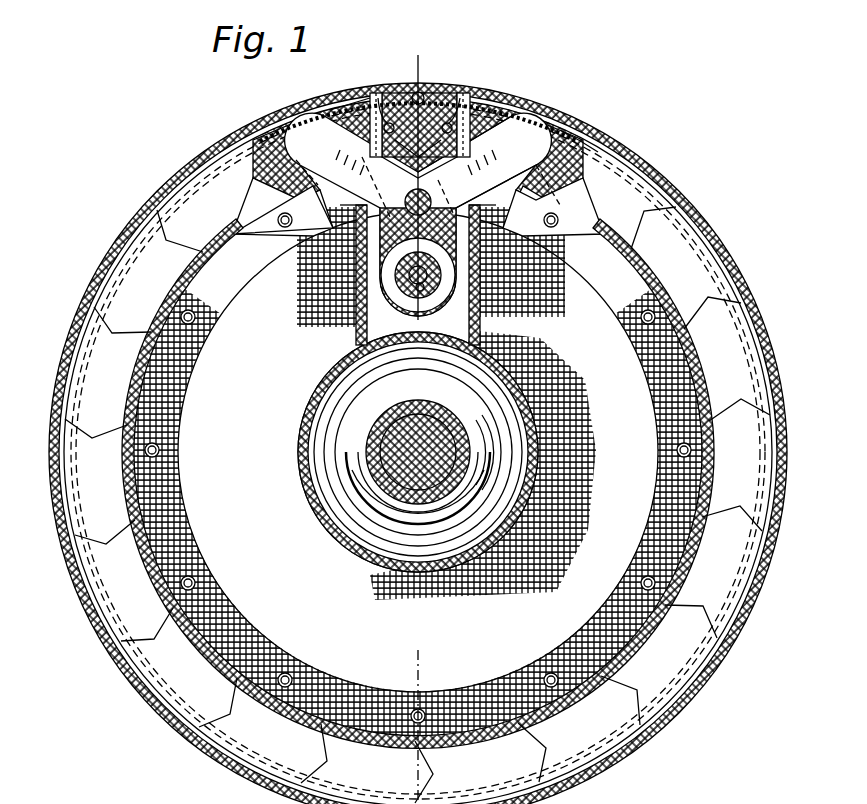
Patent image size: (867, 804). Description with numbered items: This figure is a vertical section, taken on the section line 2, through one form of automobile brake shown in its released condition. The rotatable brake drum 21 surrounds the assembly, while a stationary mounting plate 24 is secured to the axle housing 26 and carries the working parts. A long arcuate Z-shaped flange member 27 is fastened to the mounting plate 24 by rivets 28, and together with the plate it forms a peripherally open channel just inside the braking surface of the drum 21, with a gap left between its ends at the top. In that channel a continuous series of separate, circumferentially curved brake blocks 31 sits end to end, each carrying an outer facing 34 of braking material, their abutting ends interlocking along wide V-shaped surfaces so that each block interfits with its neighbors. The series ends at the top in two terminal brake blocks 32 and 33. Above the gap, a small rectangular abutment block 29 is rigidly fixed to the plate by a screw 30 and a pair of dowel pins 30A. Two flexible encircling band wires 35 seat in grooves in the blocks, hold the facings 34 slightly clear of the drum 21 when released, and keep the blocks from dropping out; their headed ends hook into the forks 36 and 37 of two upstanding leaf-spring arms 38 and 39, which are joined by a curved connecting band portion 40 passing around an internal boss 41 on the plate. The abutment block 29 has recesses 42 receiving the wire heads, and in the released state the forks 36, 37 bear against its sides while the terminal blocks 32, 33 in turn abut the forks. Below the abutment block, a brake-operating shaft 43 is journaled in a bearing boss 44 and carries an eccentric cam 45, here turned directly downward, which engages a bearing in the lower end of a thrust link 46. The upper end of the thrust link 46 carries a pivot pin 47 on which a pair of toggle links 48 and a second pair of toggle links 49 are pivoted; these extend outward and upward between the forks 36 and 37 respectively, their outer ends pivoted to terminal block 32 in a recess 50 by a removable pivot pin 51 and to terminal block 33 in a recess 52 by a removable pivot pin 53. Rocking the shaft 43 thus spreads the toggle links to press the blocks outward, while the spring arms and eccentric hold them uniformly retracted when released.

The section line 2 is at (410, 58).
The brake drum 21 is at (125, 233).
The mounting plate 24 is at (290, 540).
The axle housing 26 is at (378, 438).
The flange member 27 is at (222, 610).
The rivets 28 is at (677, 451).
The abutment block 29 is at (398, 92).
The screw 30 is at (428, 92).
The dowel pins 30A is at (372, 98).
The brake blocks 31 is at (727, 372).
The terminal brake block 32 is at (280, 178).
The terminal brake block 33 is at (547, 175).
The facing 34 is at (280, 123).
The band wires 35 is at (220, 143).
The forks 36 is at (330, 135).
The forks 37 is at (495, 106).
The leaf-spring arm 38 is at (367, 253).
The leaf-spring arm 39 is at (493, 260).
The connecting band portion 40 is at (300, 472).
The internal boss 41 is at (312, 500).
The recesses 42 is at (395, 165).
The brake-operating shaft 43 is at (403, 270).
The bearing boss 44 is at (430, 214).
The eccentric cam 45 is at (407, 292).
The thrust link 46 is at (395, 237).
The pivot pin 47 is at (423, 207).
The toggle links 48 is at (322, 200).
The toggle links 49 is at (513, 187).
The recess 50 is at (360, 104).
The removable pivot pin 51 is at (263, 163).
The recess 52 is at (530, 165).
The removable pivot pin 53 is at (560, 130).